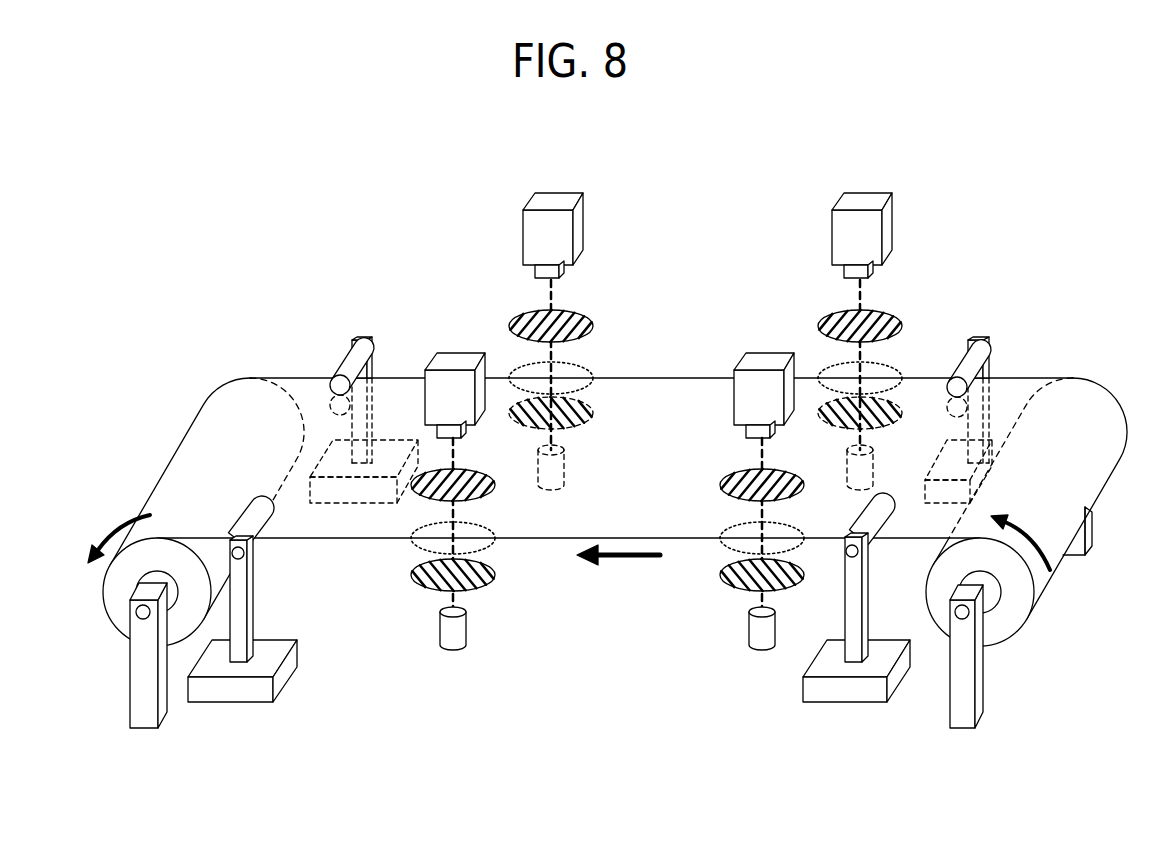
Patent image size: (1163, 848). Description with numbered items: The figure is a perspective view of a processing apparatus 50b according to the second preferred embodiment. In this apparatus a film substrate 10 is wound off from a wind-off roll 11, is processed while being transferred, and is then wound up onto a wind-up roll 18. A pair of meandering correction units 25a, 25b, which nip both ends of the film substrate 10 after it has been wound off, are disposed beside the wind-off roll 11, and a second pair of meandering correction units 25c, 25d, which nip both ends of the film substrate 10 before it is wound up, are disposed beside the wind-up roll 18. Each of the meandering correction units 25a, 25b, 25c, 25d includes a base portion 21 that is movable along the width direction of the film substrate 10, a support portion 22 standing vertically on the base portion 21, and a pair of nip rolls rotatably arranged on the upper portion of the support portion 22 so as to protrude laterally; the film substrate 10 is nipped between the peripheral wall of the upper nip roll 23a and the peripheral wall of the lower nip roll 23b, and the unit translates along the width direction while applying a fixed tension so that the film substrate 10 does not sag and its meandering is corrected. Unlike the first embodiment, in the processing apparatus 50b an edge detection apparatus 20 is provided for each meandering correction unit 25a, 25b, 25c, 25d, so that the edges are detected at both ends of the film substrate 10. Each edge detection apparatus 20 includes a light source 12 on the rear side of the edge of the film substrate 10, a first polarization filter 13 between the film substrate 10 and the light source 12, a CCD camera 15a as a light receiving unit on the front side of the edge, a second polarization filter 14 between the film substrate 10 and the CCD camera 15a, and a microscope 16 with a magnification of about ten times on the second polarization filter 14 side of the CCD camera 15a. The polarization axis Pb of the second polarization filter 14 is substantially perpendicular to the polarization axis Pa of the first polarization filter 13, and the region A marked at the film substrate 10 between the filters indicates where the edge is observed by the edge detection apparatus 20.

The film substrate 10 is at (558, 523).
The wind-off roll 11 is at (1030, 633).
The light source 12 is at (877, 468).
The first polarization filter 13 is at (898, 406).
The second polarization filter 14 is at (893, 317).
The CCD camera 15a is at (887, 222).
The microscope 16 is at (868, 274).
The wind-up roll 18 is at (106, 638).
The edge detection apparatus 20 is at (904, 324).
The base portion 21 is at (823, 694).
The support portion 22 is at (850, 598).
The upper nip roll 23a is at (902, 515).
The lower nip roll 23b is at (888, 522).
The meandering correction unit 25a is at (879, 665).
The meandering correction unit 25b is at (1003, 357).
The meandering correction unit 25c is at (247, 708).
The meandering correction unit 25d is at (331, 362).
The processing apparatus 50b is at (181, 227).
The polarization axis Pa is at (826, 416).
The polarization axis Pb is at (826, 320).
The inspection area A is at (822, 370).